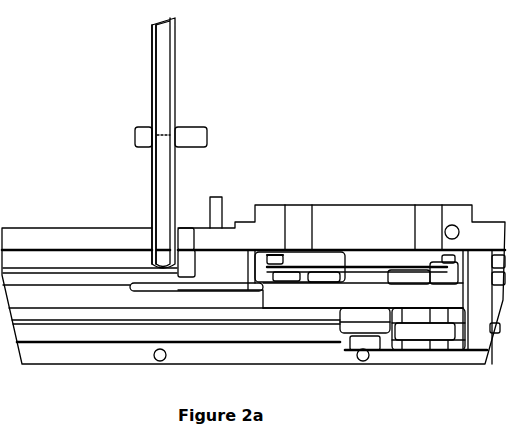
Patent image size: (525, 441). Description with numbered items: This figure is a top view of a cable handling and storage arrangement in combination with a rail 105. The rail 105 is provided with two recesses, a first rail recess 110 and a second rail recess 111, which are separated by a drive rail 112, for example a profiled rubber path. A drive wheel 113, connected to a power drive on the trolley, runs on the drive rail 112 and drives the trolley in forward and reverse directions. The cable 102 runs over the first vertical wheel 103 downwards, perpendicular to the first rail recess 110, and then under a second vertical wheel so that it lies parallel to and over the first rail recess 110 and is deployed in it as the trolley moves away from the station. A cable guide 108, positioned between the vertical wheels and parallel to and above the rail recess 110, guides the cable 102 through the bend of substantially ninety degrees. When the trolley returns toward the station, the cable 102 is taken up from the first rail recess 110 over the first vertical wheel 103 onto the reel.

The cable 102 is at (170, 143).
The first vertical wheel 103 is at (152, 103).
The rail 105 is at (253, 241).
The cable guide 108 is at (220, 268).
The first rail recess 110 is at (90, 263).
The second rail recess 111 is at (236, 334).
The drive rail 112 is at (133, 294).
The drive wheel 113 is at (363, 295).